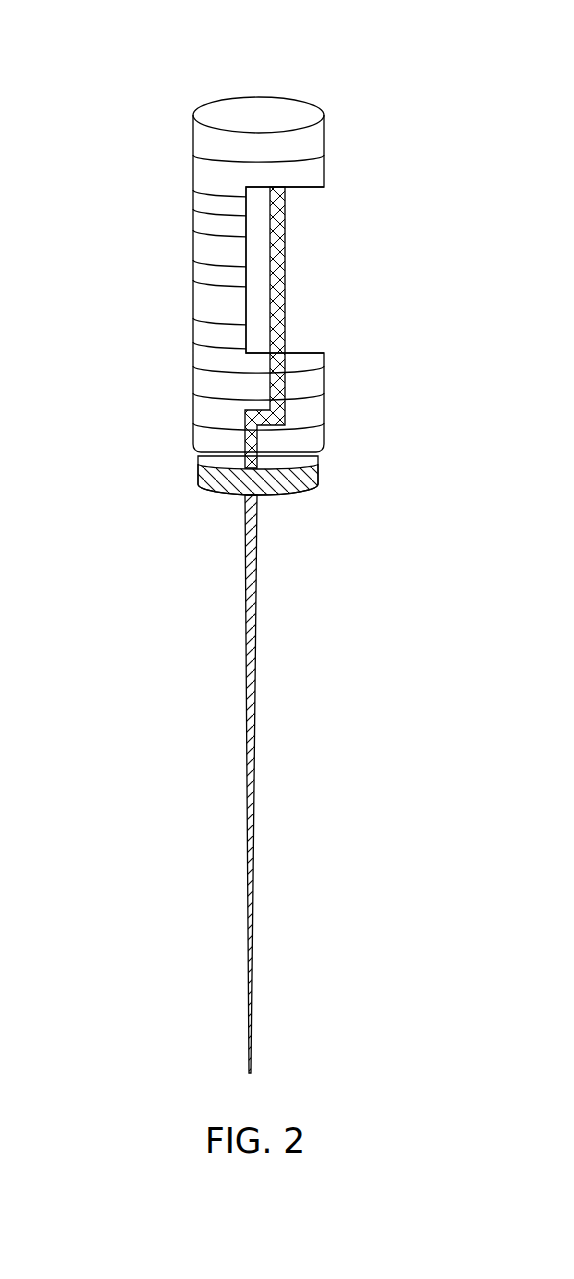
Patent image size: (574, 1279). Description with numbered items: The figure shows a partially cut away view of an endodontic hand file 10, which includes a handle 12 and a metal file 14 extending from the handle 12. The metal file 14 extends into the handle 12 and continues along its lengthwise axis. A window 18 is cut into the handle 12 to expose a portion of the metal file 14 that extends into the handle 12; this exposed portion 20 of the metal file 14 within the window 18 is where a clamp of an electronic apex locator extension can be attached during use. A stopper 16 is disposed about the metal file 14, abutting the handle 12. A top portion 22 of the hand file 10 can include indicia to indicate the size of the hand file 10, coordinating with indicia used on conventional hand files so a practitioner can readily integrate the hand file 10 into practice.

The endodontic hand file 10 is at (157, 75).
The handle 12 is at (193, 266).
The metal file 14 is at (257, 714).
The stopper 16 is at (285, 497).
The window 18 is at (363, 250).
The exposed portion 20 is at (272, 230).
The top portion 22 is at (254, 84).